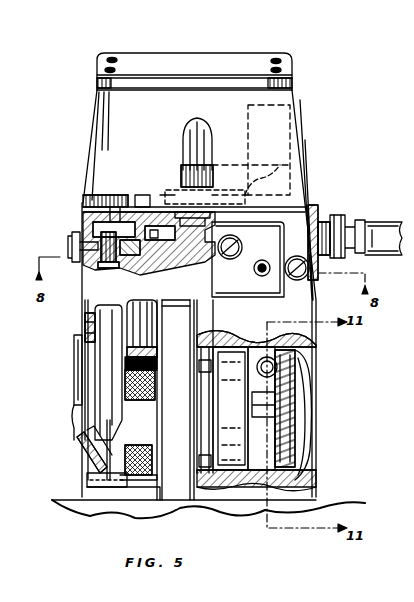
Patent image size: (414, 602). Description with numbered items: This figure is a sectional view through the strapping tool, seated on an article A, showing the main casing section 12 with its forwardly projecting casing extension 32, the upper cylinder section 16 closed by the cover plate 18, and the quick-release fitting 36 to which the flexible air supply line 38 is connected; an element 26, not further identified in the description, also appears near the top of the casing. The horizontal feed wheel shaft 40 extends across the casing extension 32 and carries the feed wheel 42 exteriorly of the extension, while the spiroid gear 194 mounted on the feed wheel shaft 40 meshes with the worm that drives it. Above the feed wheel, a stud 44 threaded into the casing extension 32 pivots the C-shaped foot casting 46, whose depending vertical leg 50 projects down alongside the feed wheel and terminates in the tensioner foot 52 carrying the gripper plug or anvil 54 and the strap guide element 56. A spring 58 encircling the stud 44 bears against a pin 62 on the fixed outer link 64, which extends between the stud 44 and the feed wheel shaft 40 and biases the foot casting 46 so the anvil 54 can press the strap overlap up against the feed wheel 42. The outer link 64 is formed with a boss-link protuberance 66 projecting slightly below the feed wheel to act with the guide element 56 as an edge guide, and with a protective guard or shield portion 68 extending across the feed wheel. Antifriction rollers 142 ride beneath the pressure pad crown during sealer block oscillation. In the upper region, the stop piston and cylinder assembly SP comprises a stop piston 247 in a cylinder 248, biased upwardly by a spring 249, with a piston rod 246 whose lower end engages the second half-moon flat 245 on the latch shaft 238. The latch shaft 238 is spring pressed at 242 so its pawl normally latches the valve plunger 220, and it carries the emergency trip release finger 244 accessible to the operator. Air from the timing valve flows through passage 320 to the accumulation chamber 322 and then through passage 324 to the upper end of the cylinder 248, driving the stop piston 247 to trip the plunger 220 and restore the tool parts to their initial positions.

The cover plate 18 is at (237, 53).
The upper cylinder section 16 is at (304, 125).
The accumulation chamber 322 is at (288, 118).
The dome member 26 is at (208, 166).
The latch shaft 238 is at (88, 225).
The spring 242 is at (110, 222).
The emergency trip release finger 244 is at (73, 240).
The valve plunger 220 is at (72, 260).
The second half-moon extension or flat 245 is at (178, 265).
The stop piston 247 is at (168, 212).
The stop piston and cylinder assembly SP is at (146, 205).
The piston rod 246 is at (104, 200).
The cylinder 248 is at (250, 196).
The passage 324 is at (304, 168).
The spring 249 is at (236, 250).
The passage 320 is at (326, 212).
The quick-release fitting 36 is at (346, 222).
The flexible air supply line 38 is at (378, 256).
The stud 44 is at (86, 318).
The fixed outer link 64 is at (108, 333).
The feed wheel 42 is at (135, 388).
The feed wheel shaft 40 is at (73, 418).
The spring 58 is at (150, 330).
The pin 62 is at (156, 376).
The depending vertical leg 50 is at (157, 432).
The protective guard or shield portion 68 is at (158, 446).
The boss-link protuberance 66 is at (78, 442).
The tensioner foot 52 is at (90, 490).
The gripper plug or anvil 54 is at (130, 500).
The strap guide element 56 is at (97, 490).
The foot casting 46 is at (170, 487).
The article A is at (218, 515).
The antifriction rollers 142 is at (260, 335).
The casing extension 32 is at (310, 345).
The spiroid gear 194 is at (300, 428).
The main casing section 12 is at (320, 473).